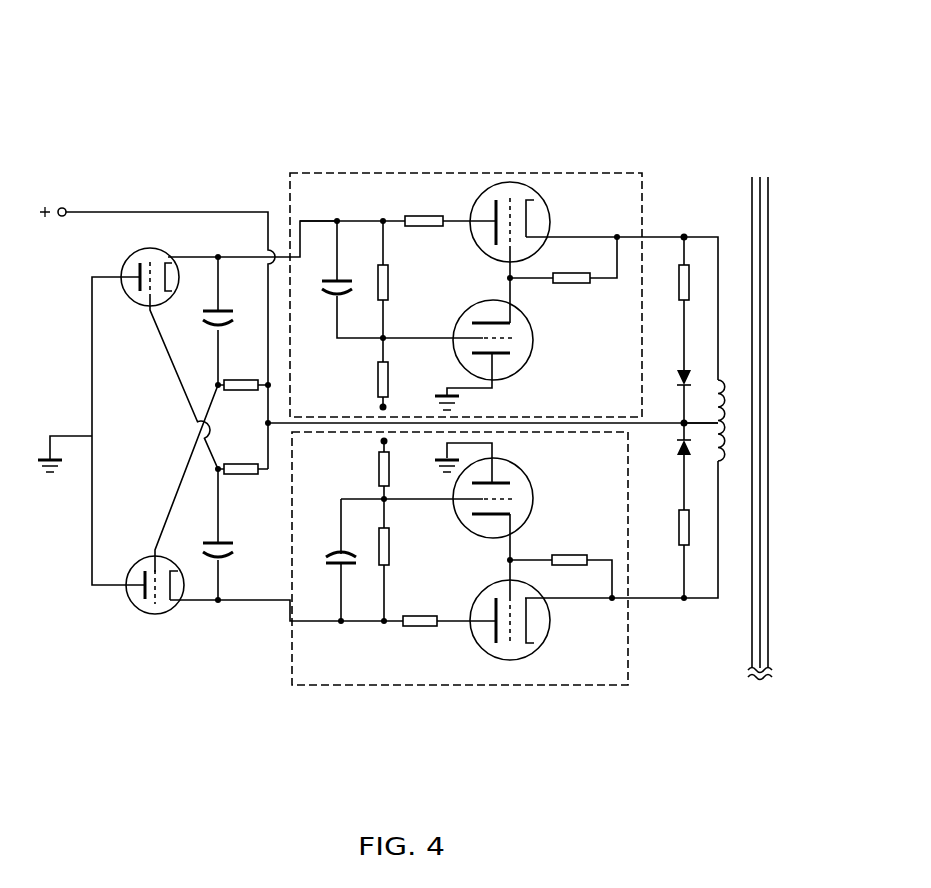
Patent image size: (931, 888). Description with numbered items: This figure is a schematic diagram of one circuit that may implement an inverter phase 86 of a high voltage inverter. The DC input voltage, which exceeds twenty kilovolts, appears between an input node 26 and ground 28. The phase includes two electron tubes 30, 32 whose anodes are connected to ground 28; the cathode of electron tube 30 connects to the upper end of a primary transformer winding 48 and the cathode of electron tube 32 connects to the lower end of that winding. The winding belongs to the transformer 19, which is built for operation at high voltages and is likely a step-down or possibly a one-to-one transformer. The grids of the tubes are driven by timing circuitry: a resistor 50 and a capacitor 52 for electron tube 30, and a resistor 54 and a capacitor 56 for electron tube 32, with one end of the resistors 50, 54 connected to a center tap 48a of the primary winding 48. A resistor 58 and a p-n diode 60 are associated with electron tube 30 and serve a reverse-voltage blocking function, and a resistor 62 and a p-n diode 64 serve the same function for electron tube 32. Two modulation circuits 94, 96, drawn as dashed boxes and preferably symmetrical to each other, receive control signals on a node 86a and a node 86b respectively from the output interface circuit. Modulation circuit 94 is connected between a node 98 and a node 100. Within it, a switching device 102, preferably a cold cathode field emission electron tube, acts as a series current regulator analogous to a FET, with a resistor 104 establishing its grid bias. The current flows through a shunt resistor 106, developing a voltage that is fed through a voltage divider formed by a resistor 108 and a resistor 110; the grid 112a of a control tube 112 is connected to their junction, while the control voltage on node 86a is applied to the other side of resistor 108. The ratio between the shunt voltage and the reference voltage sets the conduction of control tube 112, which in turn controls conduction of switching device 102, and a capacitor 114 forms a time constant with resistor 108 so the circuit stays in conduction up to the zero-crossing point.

The inverter phase 86 is at (275, 96).
The node 26 is at (63, 208).
The electron tube 30 is at (140, 250).
The electron tube 32 is at (153, 614).
The capacitor 56 is at (232, 318).
The resistor 54 is at (238, 380).
The ground 28 is at (47, 450).
The resistor 50 is at (240, 463).
The capacitor 52 is at (238, 549).
The node 98 is at (313, 220).
The switching device 102 is at (492, 182).
The modulation circuit 94 is at (590, 172).
The node 100 is at (684, 235).
The transformer 19 is at (782, 207).
The shunt resistor 106 is at (413, 215).
The capacitor 114 is at (342, 278).
The resistor 110 is at (389, 287).
The grid 112a is at (418, 338).
The resistor 108 is at (372, 376).
The node 86a is at (378, 407).
The resistor 104 is at (575, 284).
The control tube 112 is at (524, 371).
The resistor 58 is at (678, 295).
The p-n diode 60 is at (676, 378).
The primary transformer winding 48 is at (724, 371).
The center tap 48a is at (738, 436).
The p-n diode 64 is at (676, 456).
The resistor 62 is at (678, 534).
The node 86b is at (380, 442).
The modulation circuit 96 is at (594, 692).